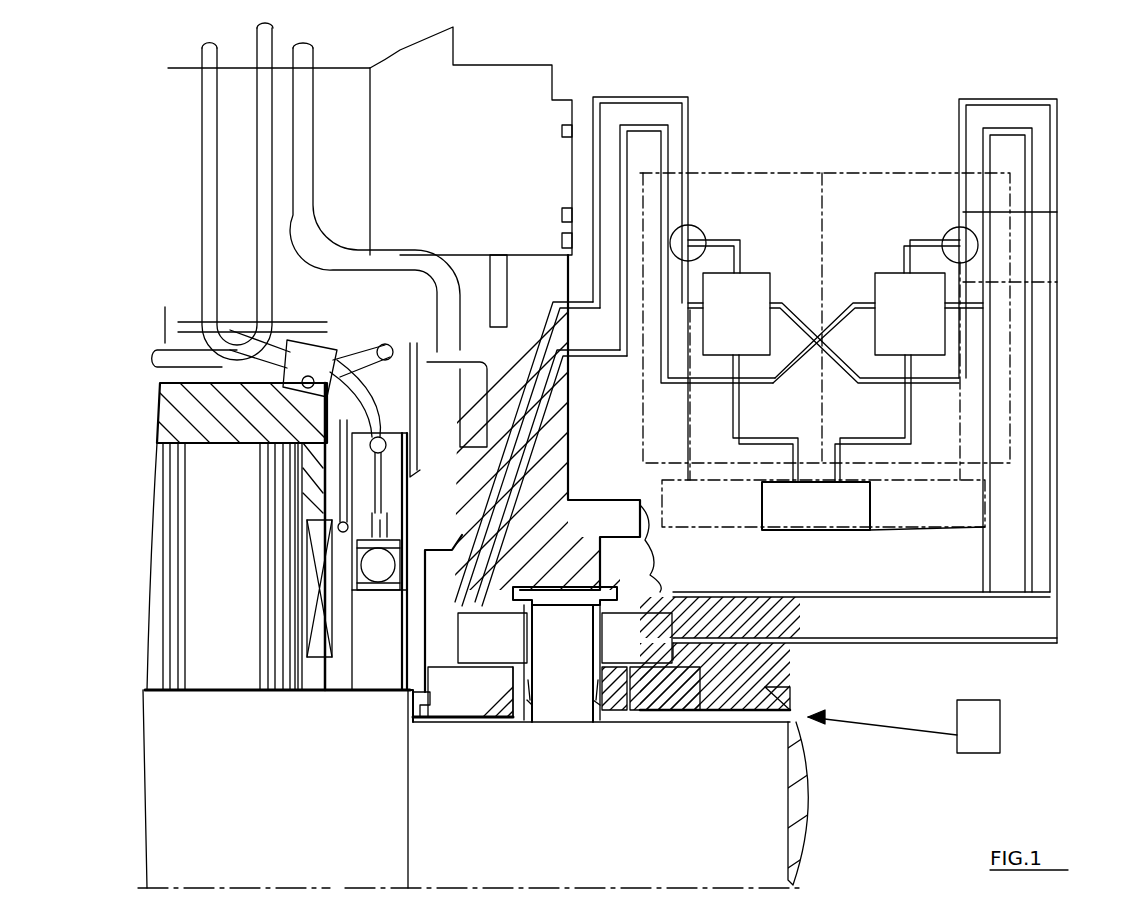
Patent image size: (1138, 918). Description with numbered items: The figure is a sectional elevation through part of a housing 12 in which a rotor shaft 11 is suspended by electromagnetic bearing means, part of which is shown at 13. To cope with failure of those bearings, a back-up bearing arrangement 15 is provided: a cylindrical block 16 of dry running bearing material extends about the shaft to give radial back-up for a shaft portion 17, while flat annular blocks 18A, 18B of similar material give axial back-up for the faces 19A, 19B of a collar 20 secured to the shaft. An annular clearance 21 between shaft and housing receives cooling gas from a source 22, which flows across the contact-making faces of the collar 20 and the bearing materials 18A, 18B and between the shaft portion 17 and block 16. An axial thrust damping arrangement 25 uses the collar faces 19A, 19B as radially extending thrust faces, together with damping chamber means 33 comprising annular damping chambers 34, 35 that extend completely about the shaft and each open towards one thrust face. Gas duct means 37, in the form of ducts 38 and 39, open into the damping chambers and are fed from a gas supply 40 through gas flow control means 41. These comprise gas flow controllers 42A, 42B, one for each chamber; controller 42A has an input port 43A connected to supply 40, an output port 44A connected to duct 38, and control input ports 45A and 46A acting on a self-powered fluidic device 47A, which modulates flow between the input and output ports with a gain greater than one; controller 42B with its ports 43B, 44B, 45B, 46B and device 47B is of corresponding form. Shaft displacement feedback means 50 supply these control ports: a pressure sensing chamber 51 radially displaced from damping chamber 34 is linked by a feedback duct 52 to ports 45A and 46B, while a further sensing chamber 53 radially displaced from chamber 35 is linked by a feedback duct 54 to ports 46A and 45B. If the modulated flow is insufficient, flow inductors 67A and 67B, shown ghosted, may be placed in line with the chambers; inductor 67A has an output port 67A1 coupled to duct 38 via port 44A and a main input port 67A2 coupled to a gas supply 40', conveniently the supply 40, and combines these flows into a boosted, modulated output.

The rotor shaft 11 is at (775, 782).
The housing 12 is at (768, 690).
The electromagnetic bearing means 13 is at (587, 597).
The back-up bearing arrangement 15 is at (535, 730).
The cylindrical block 16 is at (428, 718).
The shaft portion 17 is at (408, 730).
The flat annular block 18A is at (618, 710).
The flat annular block 18B is at (512, 712).
The collar face 19A is at (600, 720).
The collar face 19B is at (532, 712).
The collar 20 is at (566, 666).
The annular clearance 21 is at (540, 700).
The source 22 is at (1000, 704).
The axial thrust damping arrangement 25 is at (772, 670).
The damping chamber means 33 is at (695, 722).
The damping chamber 34 is at (685, 655).
The damping chamber 35 is at (468, 705).
The gas duct means 37 is at (455, 610).
The duct 38 is at (1057, 640).
The duct 39 is at (513, 415).
The gas supply 40 is at (816, 506).
The gas supply 40' is at (823, 503).
The gas flow control means 41 is at (875, 537).
The gas flow controller 42A is at (905, 172).
The gas flow controller 42B is at (708, 172).
The input port 43A is at (838, 450).
The input port 43B is at (795, 450).
The output port 44A is at (959, 172).
The output port 44B is at (688, 170).
The control input port 45A is at (990, 172).
The control input port 45B is at (650, 170).
The control input port 46A is at (835, 310).
The control input port 46B is at (795, 310).
The self-powered fluidic device 47A is at (909, 335).
The self-powered fluidic device 47B is at (737, 335).
The shaft displacement feedback means 50 is at (502, 582).
The pressure sensing chamber 51 is at (637, 638).
The feedback duct 52 is at (745, 600).
The sensing chamber 53 is at (540, 600).
The feedback duct 54 is at (520, 418).
The flow inductor 67A is at (948, 238).
The inductor output port 67A1 is at (1057, 212).
The inductor main input port 67A2 is at (1057, 282).
The flow inductor 67B is at (700, 238).